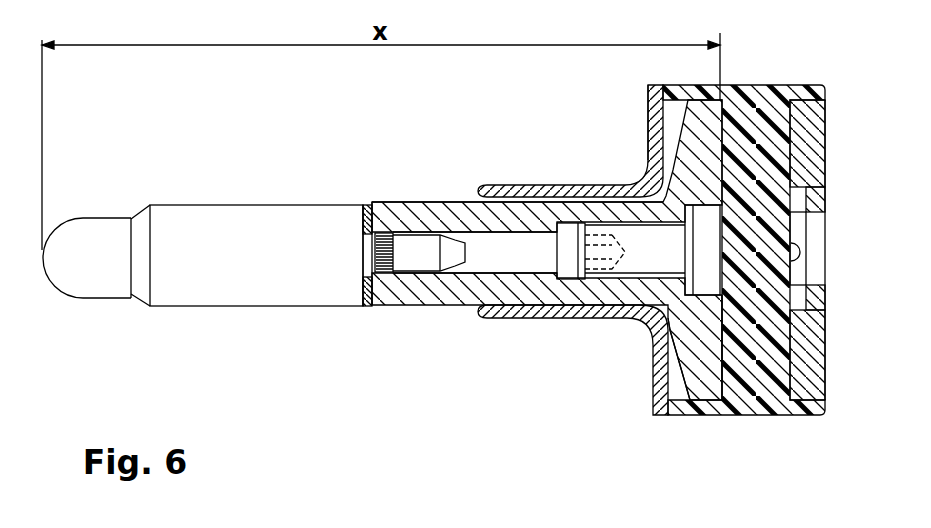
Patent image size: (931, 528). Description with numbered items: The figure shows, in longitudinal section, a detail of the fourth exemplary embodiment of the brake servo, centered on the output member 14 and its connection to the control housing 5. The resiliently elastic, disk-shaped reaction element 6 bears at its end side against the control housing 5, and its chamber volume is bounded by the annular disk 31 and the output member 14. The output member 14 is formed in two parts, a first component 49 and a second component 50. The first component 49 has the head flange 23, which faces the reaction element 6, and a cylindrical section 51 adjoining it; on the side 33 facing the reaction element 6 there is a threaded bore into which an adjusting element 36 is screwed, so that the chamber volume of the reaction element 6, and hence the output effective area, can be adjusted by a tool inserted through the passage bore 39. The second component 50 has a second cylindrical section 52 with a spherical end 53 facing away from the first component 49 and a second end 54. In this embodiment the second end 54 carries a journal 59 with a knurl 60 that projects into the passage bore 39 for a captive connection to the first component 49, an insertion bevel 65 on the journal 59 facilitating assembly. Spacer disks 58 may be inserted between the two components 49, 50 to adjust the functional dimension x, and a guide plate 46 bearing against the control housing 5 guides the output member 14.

The control housing 5 is at (795, 88).
The reaction element 6 is at (759, 143).
The output member 14 is at (390, 190).
The head flange 23 is at (707, 363).
The annular disk 31 is at (812, 360).
The side facing toward the reaction element 33 is at (735, 360).
The adjusting element 36 is at (636, 285).
The passage bore 39 is at (528, 234).
The guide plate 46 is at (548, 310).
The first component 49 is at (625, 188).
The second component 50 is at (203, 197).
The cylindrical section 51 is at (600, 287).
The second cylindrical section 52 is at (207, 278).
The spherical end 53 is at (63, 275).
The second end 54 is at (352, 220).
The spacer disk 58 is at (367, 307).
The journal 59 is at (414, 245).
The knurl 60 is at (400, 262).
The insertion bevel 65 is at (460, 268).